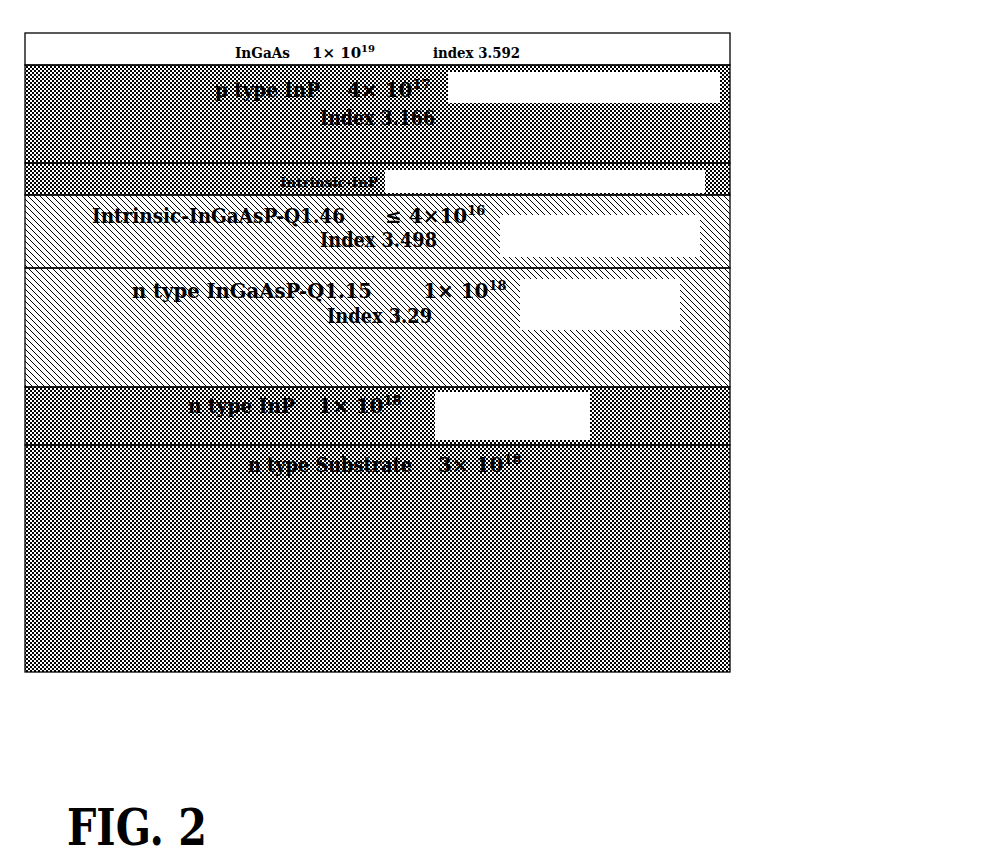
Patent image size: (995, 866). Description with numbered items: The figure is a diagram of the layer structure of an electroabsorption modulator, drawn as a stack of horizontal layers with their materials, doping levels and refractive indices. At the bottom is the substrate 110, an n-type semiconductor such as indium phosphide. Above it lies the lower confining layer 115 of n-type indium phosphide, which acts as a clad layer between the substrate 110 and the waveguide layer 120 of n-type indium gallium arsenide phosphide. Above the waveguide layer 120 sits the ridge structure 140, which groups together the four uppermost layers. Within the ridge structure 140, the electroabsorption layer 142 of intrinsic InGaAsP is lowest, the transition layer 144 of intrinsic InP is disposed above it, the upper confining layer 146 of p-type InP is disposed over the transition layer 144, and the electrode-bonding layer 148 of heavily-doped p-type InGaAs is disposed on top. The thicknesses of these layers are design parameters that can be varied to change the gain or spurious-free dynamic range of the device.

The substrate 110 is at (702, 542).
The lower confining layer 115 is at (695, 425).
The waveguide layer 120 is at (707, 343).
The ridge structure 140 is at (466, 148).
The electroabsorption layer 142 is at (420, 231).
The transition layer 144 is at (705, 183).
The upper confining layer 146 is at (708, 122).
The electrode-bonding layer 148 is at (705, 55).